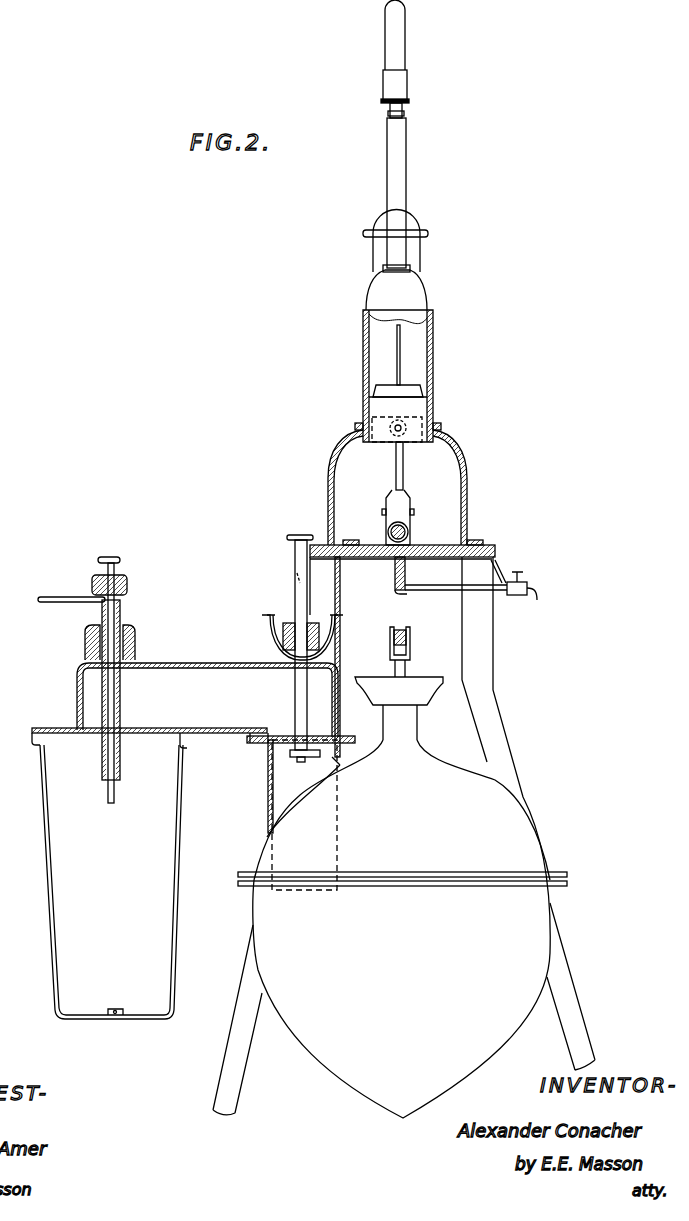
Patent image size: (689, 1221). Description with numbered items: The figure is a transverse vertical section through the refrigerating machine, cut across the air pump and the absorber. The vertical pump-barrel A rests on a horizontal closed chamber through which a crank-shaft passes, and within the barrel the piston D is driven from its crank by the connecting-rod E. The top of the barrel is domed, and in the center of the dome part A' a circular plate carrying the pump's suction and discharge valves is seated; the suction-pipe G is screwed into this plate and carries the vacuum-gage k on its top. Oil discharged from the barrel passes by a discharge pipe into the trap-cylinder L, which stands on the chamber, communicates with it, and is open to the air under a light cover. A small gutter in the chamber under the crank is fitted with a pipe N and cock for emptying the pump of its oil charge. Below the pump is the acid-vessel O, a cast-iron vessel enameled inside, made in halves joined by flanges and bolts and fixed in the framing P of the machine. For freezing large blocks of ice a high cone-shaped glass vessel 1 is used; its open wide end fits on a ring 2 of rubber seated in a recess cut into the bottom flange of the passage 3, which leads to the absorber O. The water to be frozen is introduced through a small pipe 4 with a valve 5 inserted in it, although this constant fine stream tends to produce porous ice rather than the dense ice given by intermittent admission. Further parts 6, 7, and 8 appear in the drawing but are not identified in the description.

The vacuum-gage k is at (401, 59).
The suction-pipe G is at (408, 193).
The trap-cylinder L is at (397, 241).
The dome part A' is at (396, 287).
The pump-barrel A is at (398, 376).
The piston D is at (398, 413).
The connecting-rod E is at (397, 487).
The pipe N is at (407, 577).
The acid-vessel O is at (402, 753).
The framing P is at (404, 837).
The cone-shaped glass vessel 1 is at (111, 882).
The ring of rubber 2 is at (149, 747).
The passage 3 is at (207, 703).
The small pipe 4 is at (71, 589).
The valve 5 is at (110, 669).
The tube 6 is at (294, 693).
The flange 7 is at (301, 735).
The passage 8 is at (304, 815).